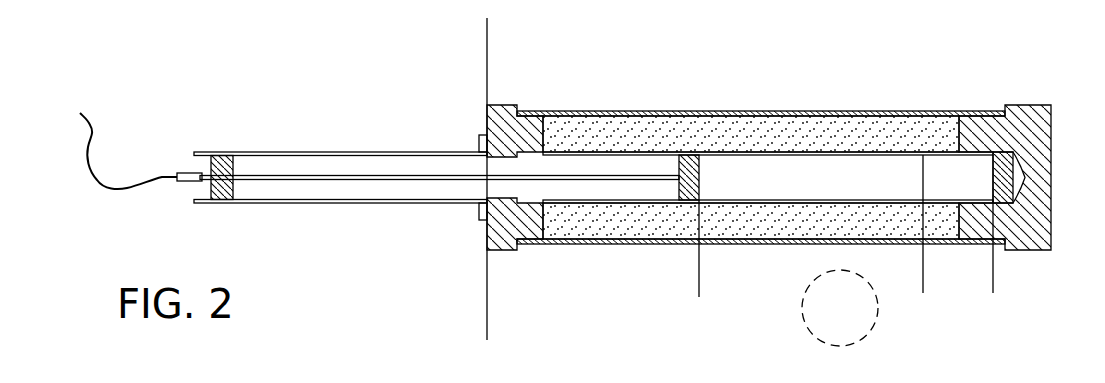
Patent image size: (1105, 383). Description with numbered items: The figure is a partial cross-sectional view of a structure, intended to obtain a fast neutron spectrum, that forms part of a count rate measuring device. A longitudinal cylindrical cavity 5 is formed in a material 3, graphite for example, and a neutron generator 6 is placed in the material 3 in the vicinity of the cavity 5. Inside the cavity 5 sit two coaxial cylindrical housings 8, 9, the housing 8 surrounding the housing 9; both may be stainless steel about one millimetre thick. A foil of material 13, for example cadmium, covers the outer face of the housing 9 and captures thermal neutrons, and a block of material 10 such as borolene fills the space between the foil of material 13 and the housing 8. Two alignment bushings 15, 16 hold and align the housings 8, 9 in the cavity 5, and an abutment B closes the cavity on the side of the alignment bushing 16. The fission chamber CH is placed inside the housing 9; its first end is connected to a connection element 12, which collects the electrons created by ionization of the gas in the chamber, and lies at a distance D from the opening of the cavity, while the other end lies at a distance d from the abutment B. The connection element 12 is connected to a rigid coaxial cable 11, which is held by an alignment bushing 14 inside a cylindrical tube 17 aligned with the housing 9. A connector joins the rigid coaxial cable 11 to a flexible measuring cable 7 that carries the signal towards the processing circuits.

The material 3 is at (498, 328).
The longitudinal cavity 5 is at (727, 103).
The neutron generator 6 is at (808, 321).
The flexible measuring cable 7 is at (130, 190).
The cylindrical housing 8 is at (830, 108).
The cylindrical housing 9 is at (887, 152).
The block of material 10 is at (590, 128).
The rigid coaxial cable 11 is at (393, 182).
The connection element 12 is at (684, 155).
The foil of material 13 is at (768, 150).
The alignment bushing 14 is at (227, 152).
The alignment bushing 15 is at (498, 122).
The alignment bushing 16 is at (1025, 128).
The cylindrical tube 17 is at (300, 205).
The abutment B is at (1000, 192).
The fission chamber CH is at (770, 183).
The distance D is at (698, 292).
The distance d is at (993, 287).